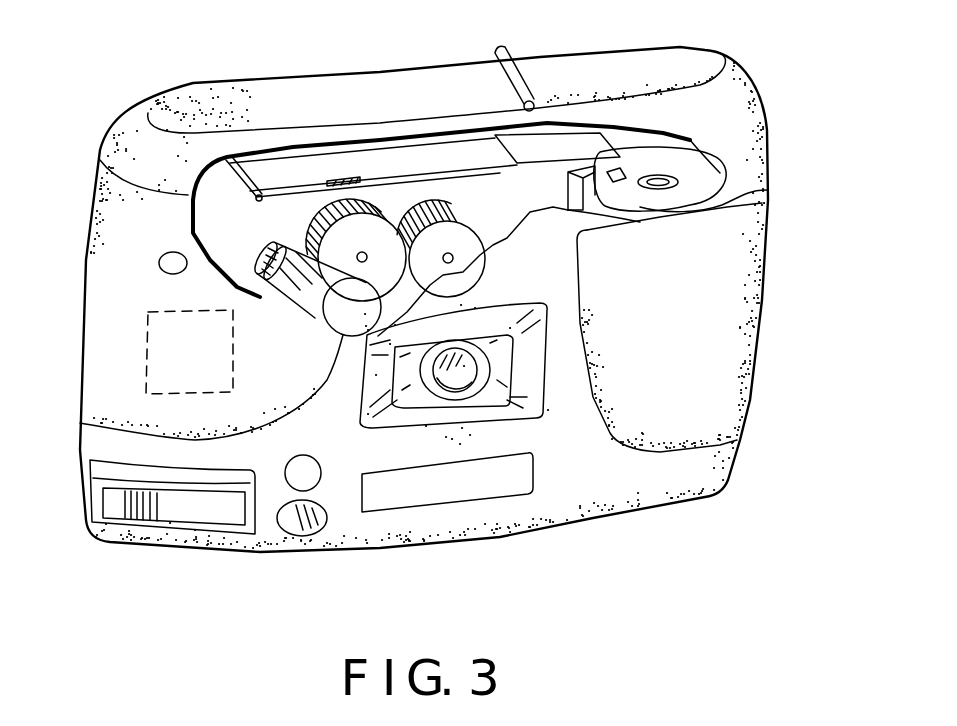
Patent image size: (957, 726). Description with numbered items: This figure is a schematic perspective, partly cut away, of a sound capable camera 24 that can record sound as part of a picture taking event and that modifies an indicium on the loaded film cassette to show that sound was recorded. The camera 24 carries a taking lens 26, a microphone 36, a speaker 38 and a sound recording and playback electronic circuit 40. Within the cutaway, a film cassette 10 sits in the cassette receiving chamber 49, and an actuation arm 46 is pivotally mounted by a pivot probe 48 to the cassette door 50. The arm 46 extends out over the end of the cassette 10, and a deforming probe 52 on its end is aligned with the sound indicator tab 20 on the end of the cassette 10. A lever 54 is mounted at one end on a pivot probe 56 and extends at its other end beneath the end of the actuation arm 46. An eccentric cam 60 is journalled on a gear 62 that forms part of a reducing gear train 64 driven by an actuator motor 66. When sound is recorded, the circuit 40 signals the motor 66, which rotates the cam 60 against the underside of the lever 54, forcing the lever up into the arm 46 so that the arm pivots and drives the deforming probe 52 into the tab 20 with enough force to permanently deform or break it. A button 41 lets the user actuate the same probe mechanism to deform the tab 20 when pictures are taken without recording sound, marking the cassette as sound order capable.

The cassette 10 is at (690, 193).
The sound indicator tab 20 is at (626, 195).
The camera 24 is at (785, 362).
The taking lens 26 is at (470, 377).
The microphone 36 is at (290, 486).
The speaker 38 is at (310, 528).
The sound recording and playback electronic circuit 40 is at (150, 364).
The button 41 is at (159, 265).
The actuation arm 46 is at (555, 105).
The pivot probe 48 is at (596, 160).
The cassette receiving chamber 49 is at (722, 172).
The cassette door 50 is at (702, 53).
The deforming probe 52 is at (690, 140).
The lever 54 is at (383, 145).
The pivot probe 56 is at (258, 175).
The eccentric cam 60 is at (458, 140).
The gear 62 is at (422, 205).
The reducing gear train 64 is at (320, 230).
The actuator motor 66 is at (263, 295).